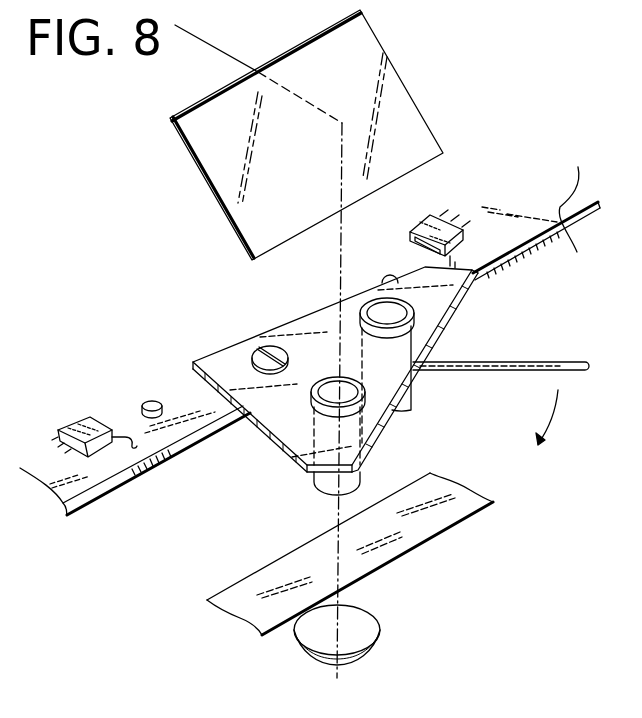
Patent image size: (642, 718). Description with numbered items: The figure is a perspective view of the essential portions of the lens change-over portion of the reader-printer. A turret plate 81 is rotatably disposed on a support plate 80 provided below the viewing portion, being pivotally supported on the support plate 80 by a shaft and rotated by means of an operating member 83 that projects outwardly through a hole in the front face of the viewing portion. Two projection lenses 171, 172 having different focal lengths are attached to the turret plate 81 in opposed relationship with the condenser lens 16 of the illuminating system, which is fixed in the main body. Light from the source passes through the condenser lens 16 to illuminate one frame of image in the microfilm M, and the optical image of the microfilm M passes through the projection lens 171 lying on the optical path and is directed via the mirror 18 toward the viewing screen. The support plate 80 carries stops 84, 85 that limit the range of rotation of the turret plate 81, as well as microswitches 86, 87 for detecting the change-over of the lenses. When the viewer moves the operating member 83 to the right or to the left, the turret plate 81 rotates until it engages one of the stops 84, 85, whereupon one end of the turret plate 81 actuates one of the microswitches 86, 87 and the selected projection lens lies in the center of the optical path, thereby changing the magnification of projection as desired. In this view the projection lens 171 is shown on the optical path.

The condenser lens 16 is at (358, 618).
The mirror 18 is at (423, 118).
The support plate 80 is at (310, 341).
The turret plate 81 is at (277, 352).
The operating member 83 is at (528, 366).
The stop 84 is at (153, 401).
The stop 85 is at (388, 270).
The microswitch 86 is at (82, 428).
The microswitch 87 is at (432, 225).
The projection lens 171 is at (360, 470).
The projection lens 172 is at (410, 397).
The microfilm M is at (463, 507).